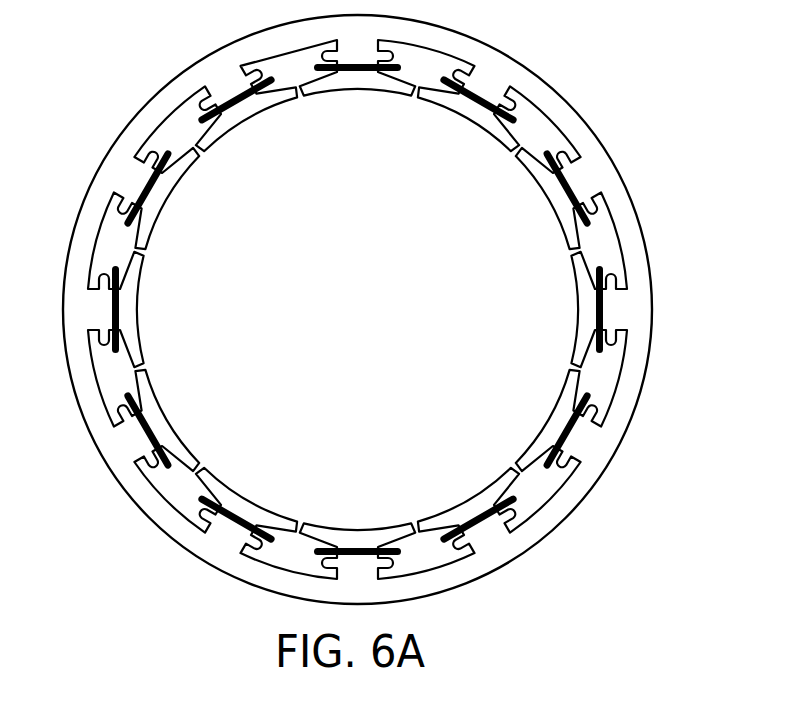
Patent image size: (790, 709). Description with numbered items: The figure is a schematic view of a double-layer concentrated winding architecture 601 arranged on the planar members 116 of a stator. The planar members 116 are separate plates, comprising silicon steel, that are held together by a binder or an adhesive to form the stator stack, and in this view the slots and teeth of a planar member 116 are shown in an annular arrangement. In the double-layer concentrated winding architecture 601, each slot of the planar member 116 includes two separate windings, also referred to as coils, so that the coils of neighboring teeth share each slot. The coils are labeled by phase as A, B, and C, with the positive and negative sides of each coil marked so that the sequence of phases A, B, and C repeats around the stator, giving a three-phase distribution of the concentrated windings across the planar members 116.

The planar member 116 is at (125, 67).
The double-layer concentrated winding architecture 601 is at (394, 309).
The phase A coil A is at (358, 309).
The phase B coil B is at (357, 309).
The phase C coil C is at (357, 309).